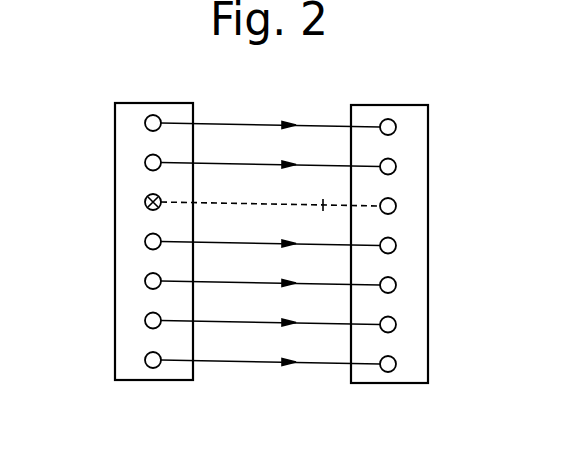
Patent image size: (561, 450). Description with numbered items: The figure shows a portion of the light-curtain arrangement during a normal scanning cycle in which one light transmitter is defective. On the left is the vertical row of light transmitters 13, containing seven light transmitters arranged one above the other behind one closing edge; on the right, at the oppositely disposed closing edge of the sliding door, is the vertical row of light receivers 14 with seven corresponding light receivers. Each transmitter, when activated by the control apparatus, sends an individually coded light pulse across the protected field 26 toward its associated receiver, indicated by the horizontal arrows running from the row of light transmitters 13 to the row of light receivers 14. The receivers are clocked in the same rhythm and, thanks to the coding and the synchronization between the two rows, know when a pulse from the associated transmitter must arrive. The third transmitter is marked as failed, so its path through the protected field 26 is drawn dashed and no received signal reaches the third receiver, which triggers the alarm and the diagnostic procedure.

The row of light transmitters 13 is at (142, 380).
The row of light receivers 14 is at (397, 383).
The protected field 26 is at (309, 145).